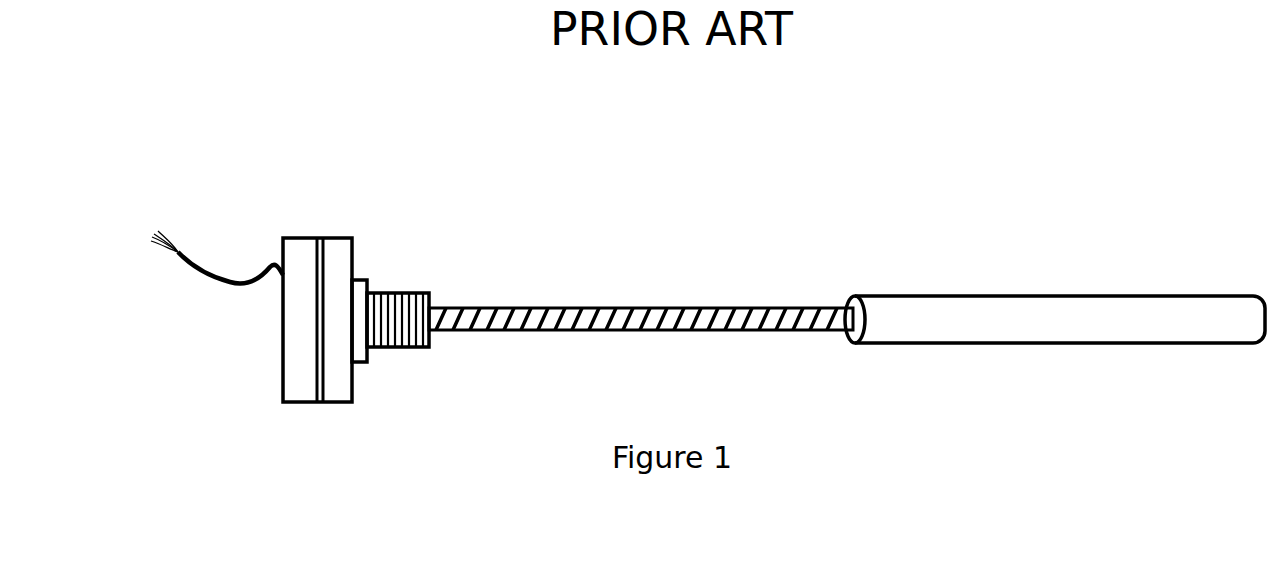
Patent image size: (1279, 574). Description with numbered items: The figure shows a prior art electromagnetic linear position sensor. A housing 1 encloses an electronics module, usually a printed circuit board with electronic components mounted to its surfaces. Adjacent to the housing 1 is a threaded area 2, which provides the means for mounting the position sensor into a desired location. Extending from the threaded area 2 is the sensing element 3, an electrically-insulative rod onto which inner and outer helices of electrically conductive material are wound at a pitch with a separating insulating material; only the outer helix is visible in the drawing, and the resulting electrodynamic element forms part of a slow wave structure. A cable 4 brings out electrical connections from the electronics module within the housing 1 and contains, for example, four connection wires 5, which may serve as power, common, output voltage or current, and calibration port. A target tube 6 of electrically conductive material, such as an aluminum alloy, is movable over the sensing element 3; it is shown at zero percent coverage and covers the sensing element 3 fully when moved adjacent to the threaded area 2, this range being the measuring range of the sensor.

The housing 1 is at (306, 233).
The threaded area 2 is at (404, 284).
The sensing element 3 is at (569, 303).
The cable 4 is at (227, 273).
The connection wires 5 is at (149, 226).
The target tube 6 is at (1000, 288).